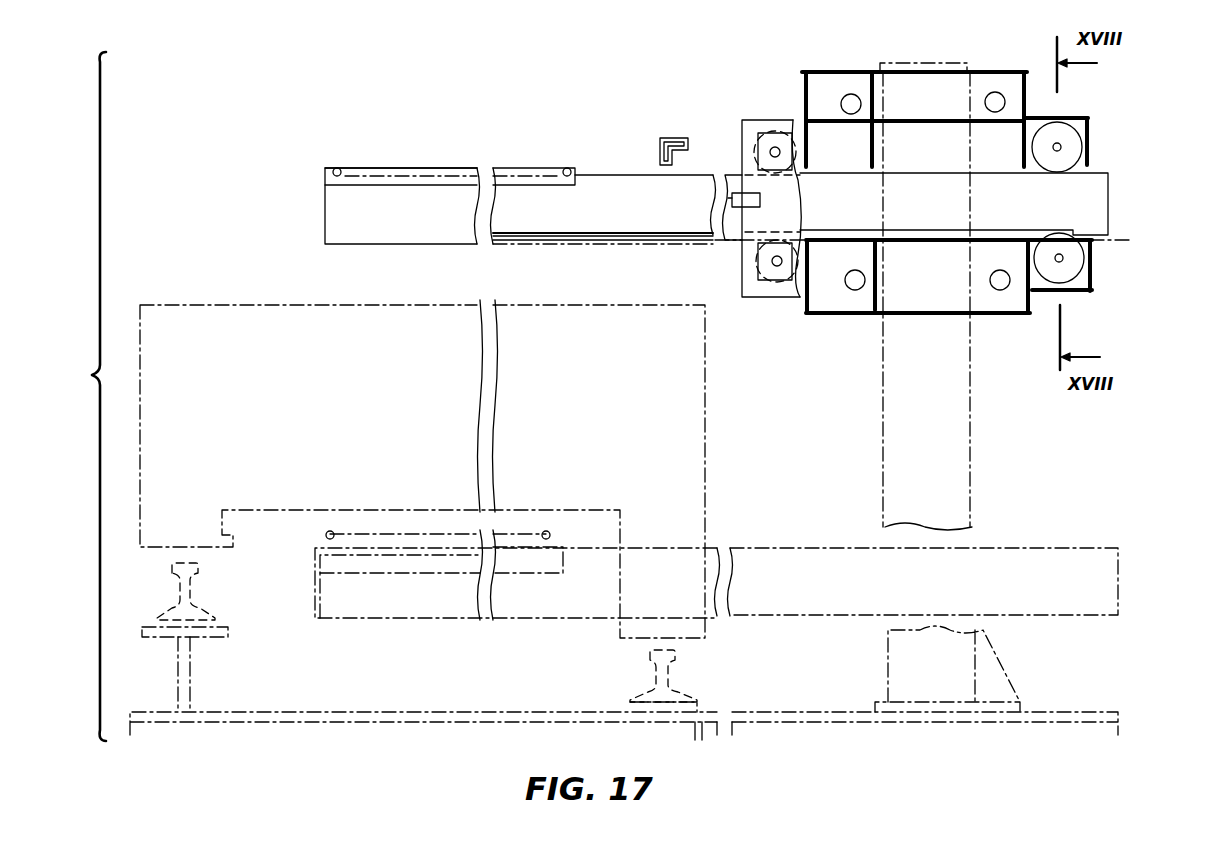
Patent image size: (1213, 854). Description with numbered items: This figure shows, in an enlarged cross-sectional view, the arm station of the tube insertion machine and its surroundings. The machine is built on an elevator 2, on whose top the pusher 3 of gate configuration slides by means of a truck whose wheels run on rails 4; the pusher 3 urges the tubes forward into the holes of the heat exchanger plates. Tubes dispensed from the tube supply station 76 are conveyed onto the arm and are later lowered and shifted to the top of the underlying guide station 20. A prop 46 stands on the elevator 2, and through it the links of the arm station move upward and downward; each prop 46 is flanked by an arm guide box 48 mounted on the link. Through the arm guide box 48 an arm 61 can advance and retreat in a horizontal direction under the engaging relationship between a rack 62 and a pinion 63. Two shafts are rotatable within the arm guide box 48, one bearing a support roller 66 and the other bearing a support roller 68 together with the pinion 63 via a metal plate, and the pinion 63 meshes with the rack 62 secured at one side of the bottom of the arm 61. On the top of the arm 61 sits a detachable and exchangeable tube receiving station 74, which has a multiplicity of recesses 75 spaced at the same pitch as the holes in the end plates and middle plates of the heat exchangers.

The elevator 2 is at (1070, 712).
The pusher of gate configuration 3 is at (180, 305).
The rails 4 is at (190, 585).
The guide station 20 is at (261, 528).
The prop 46 is at (972, 452).
The arm guide box 48 is at (853, 312).
The arm 61 is at (325, 228).
The rack 62 is at (558, 242).
The pinion 63 is at (1092, 263).
The support roller 66 is at (1084, 166).
The support roller 68 is at (758, 252).
The tube receiving station 74 is at (339, 186).
The recesses 75 is at (567, 167).
The tube supply station 76 is at (660, 138).